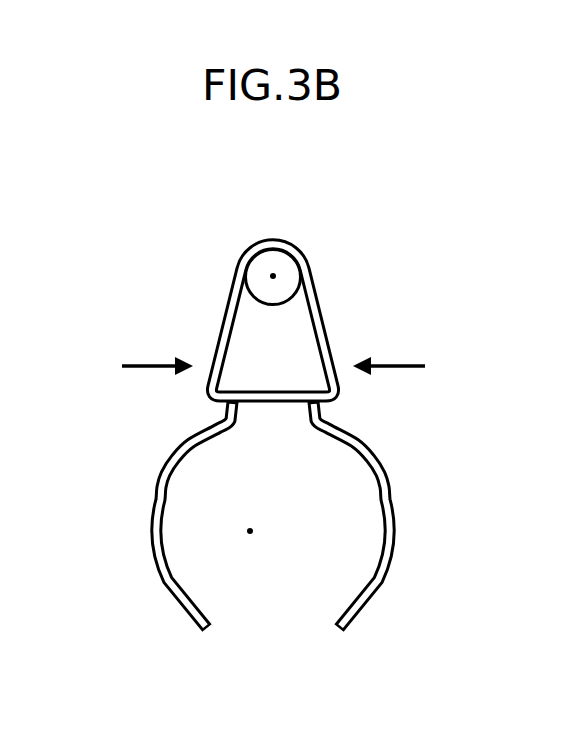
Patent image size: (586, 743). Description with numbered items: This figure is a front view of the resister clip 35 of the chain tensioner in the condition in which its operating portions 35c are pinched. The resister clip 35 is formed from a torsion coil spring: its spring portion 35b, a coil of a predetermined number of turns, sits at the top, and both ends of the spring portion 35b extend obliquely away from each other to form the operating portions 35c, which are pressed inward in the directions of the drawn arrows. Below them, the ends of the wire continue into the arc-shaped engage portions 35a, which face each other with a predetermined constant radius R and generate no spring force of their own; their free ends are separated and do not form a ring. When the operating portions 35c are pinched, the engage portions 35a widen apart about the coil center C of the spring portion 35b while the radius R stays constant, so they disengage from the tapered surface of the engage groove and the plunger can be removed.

The resister clip 35 is at (273, 400).
The engage portions 35a is at (158, 577).
The spring portion 35b is at (281, 238).
The operating portions 35c is at (219, 347).
The coil center C is at (274, 276).
The radius R is at (250, 531).